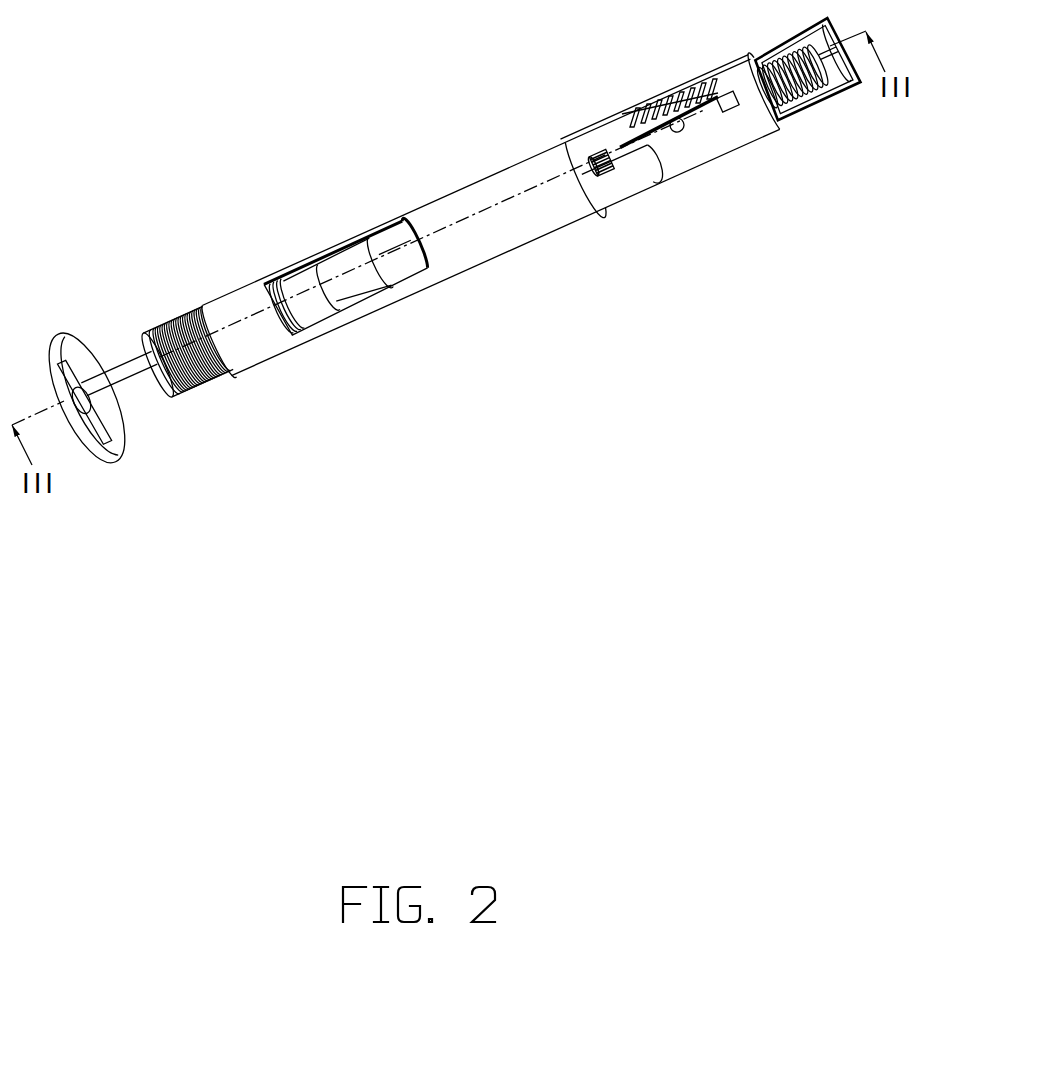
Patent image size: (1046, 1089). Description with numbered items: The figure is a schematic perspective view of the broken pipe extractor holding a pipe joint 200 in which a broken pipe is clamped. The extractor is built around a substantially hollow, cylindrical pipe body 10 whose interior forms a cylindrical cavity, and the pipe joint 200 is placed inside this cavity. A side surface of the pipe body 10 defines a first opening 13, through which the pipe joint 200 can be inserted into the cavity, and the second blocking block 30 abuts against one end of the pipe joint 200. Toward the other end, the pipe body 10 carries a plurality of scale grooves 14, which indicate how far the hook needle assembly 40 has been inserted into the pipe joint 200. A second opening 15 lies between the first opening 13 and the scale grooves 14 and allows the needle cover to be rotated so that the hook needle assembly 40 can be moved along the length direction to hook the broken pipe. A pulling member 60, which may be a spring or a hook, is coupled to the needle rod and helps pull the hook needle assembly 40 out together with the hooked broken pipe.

The pipe body 10 is at (515, 225).
The first opening 13 is at (337, 248).
The scale grooves 14 is at (677, 90).
The second opening 15 is at (600, 133).
The second blocking block 30 is at (173, 387).
The hook needle assembly 40 is at (625, 155).
The pulling member 60 is at (802, 93).
The pipe joint 200 is at (312, 308).